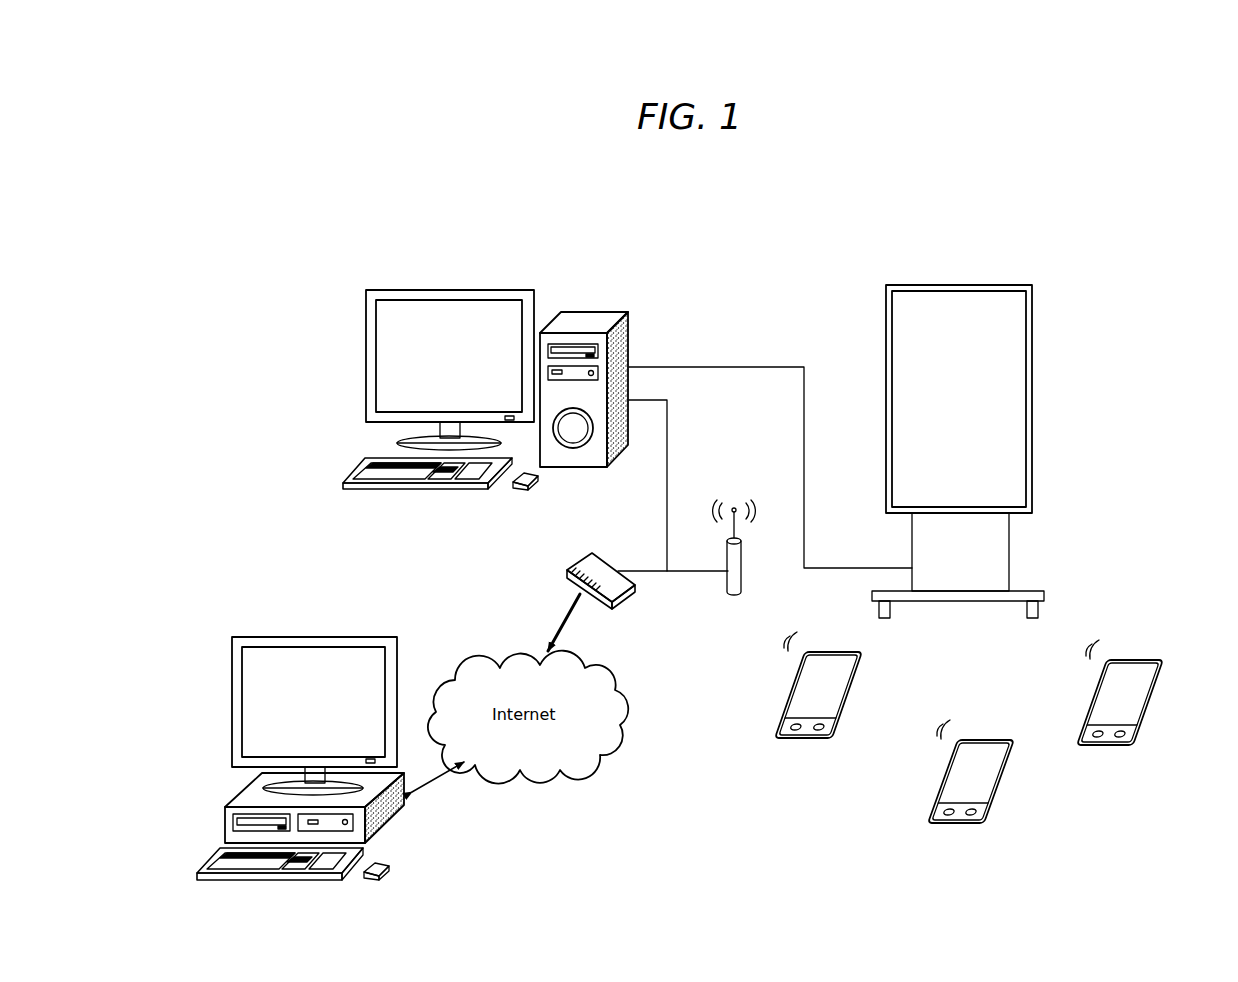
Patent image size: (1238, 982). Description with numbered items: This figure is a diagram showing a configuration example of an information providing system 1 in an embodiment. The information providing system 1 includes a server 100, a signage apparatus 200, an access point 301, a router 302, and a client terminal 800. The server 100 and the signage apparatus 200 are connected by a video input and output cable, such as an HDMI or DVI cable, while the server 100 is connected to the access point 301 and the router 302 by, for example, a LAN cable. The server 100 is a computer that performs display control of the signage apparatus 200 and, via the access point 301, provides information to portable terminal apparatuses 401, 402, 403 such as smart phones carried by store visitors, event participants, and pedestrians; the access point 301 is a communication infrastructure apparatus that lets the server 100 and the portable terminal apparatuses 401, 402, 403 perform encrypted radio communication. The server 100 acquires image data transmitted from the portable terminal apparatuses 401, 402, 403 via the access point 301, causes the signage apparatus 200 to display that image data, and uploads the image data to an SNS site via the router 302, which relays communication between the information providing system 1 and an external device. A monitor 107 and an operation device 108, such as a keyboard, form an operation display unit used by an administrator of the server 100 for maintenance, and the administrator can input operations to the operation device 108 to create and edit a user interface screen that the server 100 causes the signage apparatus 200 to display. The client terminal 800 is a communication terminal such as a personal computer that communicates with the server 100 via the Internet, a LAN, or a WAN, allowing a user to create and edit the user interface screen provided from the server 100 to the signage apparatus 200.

The information providing system 1 is at (1103, 199).
The server 100 is at (573, 286).
The monitor 107 is at (445, 315).
The operation device 108 is at (392, 476).
The signage apparatus 200 is at (1051, 293).
The access point 301 is at (733, 581).
The router 302 is at (594, 564).
The portable terminal apparatus 401 is at (791, 688).
The portable terminal apparatus 402 is at (945, 778).
The portable terminal apparatus 403 is at (1091, 696).
The client terminal 800 is at (268, 622).